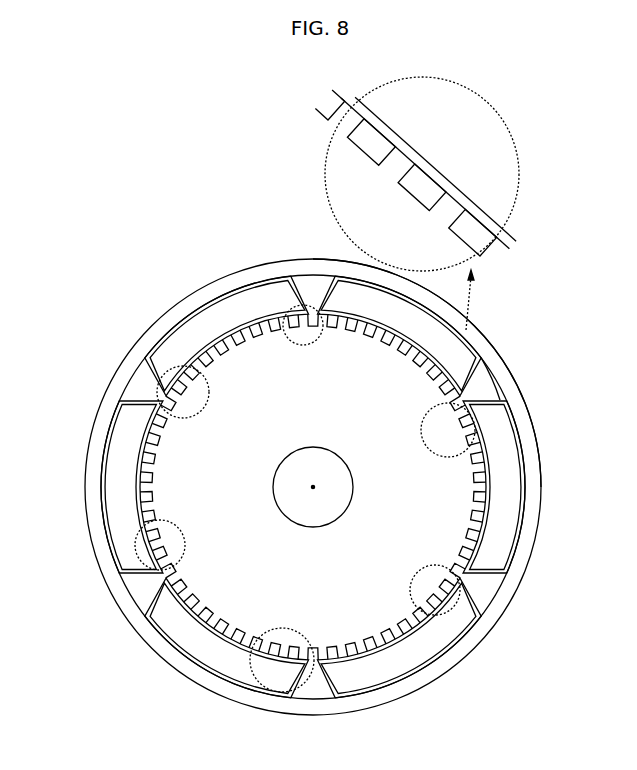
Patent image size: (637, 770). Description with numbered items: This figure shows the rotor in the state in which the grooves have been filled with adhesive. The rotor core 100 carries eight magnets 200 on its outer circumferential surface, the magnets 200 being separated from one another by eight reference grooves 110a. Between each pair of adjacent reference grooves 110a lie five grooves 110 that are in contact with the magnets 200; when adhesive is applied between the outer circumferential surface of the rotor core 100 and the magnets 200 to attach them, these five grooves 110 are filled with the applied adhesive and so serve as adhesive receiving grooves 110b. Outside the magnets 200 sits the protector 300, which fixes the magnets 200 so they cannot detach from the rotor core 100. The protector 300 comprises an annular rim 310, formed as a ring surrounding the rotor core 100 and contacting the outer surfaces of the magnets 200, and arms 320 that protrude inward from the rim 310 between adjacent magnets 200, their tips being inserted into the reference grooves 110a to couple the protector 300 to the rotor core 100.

The rotor core 100 is at (267, 377).
The grooves 110 is at (133, 437).
The reference grooves 110a is at (305, 306).
The adhesive receiving grooves 110b is at (440, 172).
The magnets 200 is at (407, 116).
The protector 300 is at (491, 336).
The rim 310 is at (536, 510).
The arms 320 is at (484, 387).